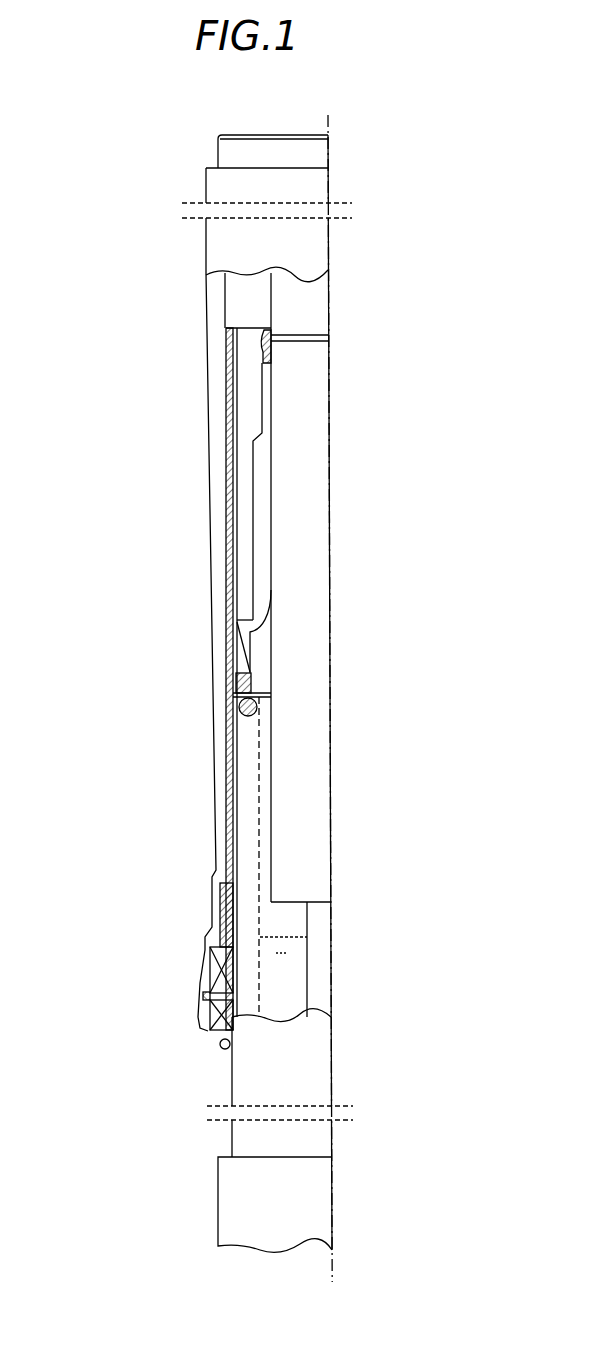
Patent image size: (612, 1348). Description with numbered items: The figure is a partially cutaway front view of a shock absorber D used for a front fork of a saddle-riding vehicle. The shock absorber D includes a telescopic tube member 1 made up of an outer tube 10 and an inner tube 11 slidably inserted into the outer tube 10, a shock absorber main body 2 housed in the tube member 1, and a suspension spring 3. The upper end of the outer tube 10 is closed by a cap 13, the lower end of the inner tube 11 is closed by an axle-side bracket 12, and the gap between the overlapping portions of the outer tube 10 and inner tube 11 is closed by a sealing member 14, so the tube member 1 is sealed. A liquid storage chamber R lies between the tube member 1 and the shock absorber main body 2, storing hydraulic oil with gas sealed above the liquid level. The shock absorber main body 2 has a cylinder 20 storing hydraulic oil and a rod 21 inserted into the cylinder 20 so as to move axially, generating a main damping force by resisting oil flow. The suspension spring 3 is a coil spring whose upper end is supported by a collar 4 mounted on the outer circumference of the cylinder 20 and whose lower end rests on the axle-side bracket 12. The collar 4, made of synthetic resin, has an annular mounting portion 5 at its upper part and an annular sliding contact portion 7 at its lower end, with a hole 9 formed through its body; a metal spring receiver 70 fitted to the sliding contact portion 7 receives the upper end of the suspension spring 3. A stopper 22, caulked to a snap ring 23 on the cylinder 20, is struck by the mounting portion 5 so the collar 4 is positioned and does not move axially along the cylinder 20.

The shock absorber D is at (152, 180).
The telescopic tube member 1 is at (231, 1077).
The shock absorber main body 2 is at (318, 393).
The suspension spring 3 is at (237, 708).
The collar 4 is at (249, 493).
The mounting portion 5 is at (260, 397).
The sliding contact portion 7 is at (233, 660).
The hole 9 is at (260, 540).
The outer tube 10 is at (207, 250).
The inner tube 11 is at (312, 1075).
The axle-side bracket 12 is at (218, 1185).
The cap 13 is at (256, 133).
The sealing member 14 is at (212, 970).
The cylinder 20 is at (312, 610).
The rod 21 is at (322, 987).
The stopper 22 is at (263, 347).
The snap ring 23 is at (275, 325).
The spring receiver 70 is at (237, 697).
The liquid storage chamber R is at (265, 820).